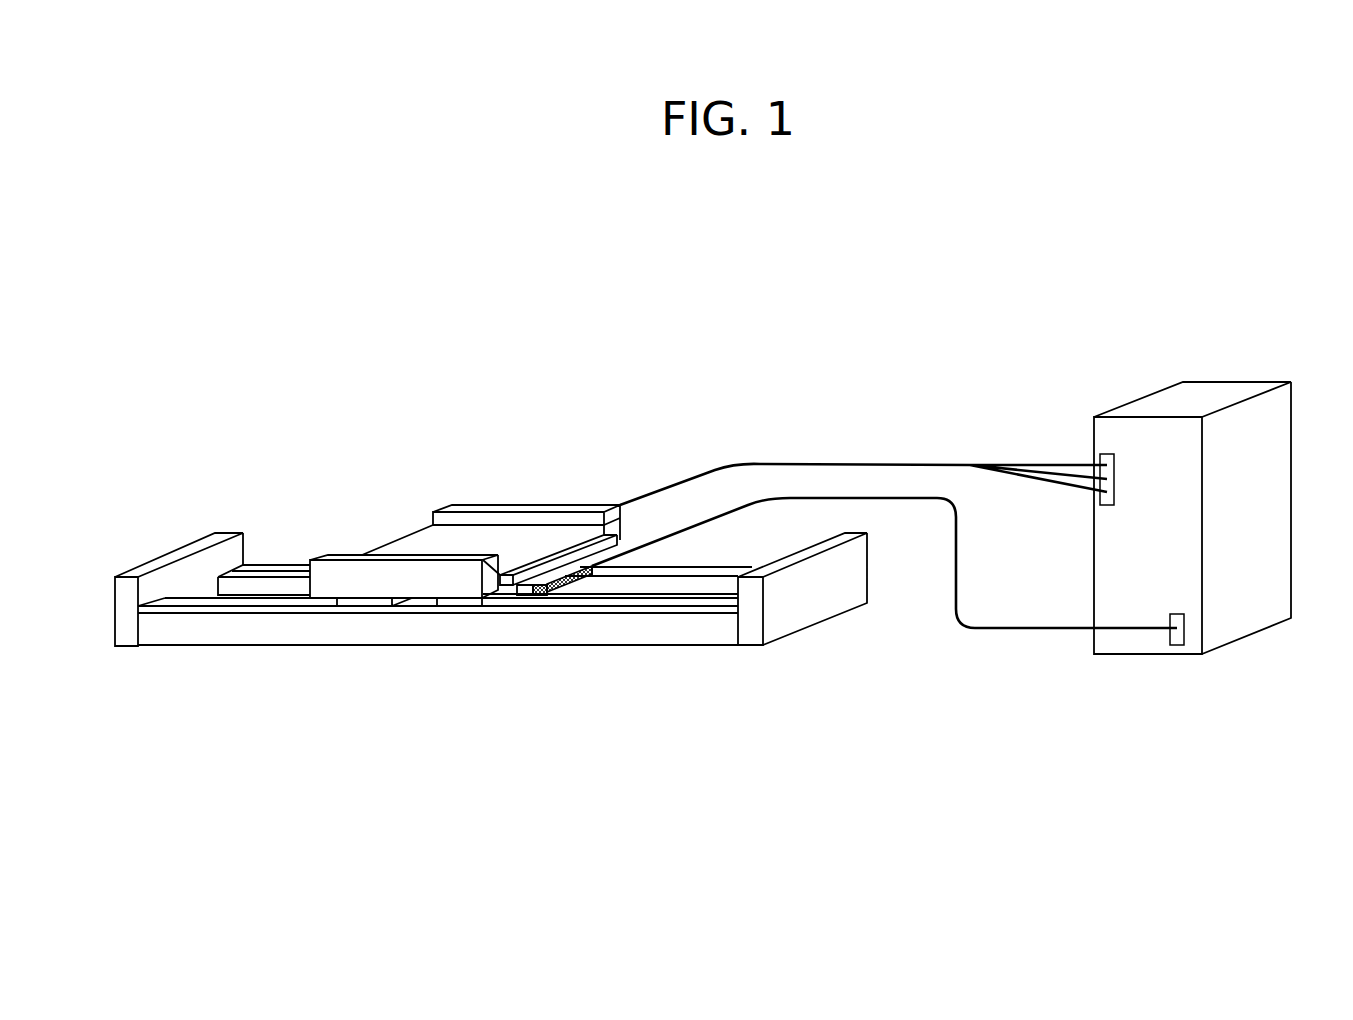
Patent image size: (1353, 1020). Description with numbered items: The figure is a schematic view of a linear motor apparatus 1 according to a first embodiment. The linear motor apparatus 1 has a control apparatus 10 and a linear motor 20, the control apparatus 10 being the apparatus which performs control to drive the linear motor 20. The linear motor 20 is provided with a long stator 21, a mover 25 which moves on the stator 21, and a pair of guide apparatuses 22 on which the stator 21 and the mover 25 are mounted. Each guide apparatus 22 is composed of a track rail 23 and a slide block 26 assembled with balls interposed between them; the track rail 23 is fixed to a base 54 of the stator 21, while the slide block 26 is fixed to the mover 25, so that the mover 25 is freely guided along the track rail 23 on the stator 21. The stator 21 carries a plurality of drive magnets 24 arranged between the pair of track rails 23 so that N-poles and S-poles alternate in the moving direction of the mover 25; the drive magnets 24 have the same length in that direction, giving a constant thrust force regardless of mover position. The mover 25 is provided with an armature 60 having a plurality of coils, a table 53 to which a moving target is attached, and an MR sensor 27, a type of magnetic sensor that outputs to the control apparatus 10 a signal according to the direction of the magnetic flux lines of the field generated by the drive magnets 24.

The linear motor apparatus 1 is at (948, 272).
The control apparatus 10 is at (1223, 382).
The linear motor 20 is at (329, 462).
The stator 21 is at (641, 493).
The drive magnets 24 is at (691, 580).
The guide apparatus 22 is at (487, 714).
The track rail 23 is at (294, 565).
The mover 25 is at (491, 497).
The armature 60 is at (490, 495).
The slide block 26 is at (362, 607).
The MR sensor 27 is at (575, 582).
The table 53 is at (577, 510).
The base 54 is at (693, 628).